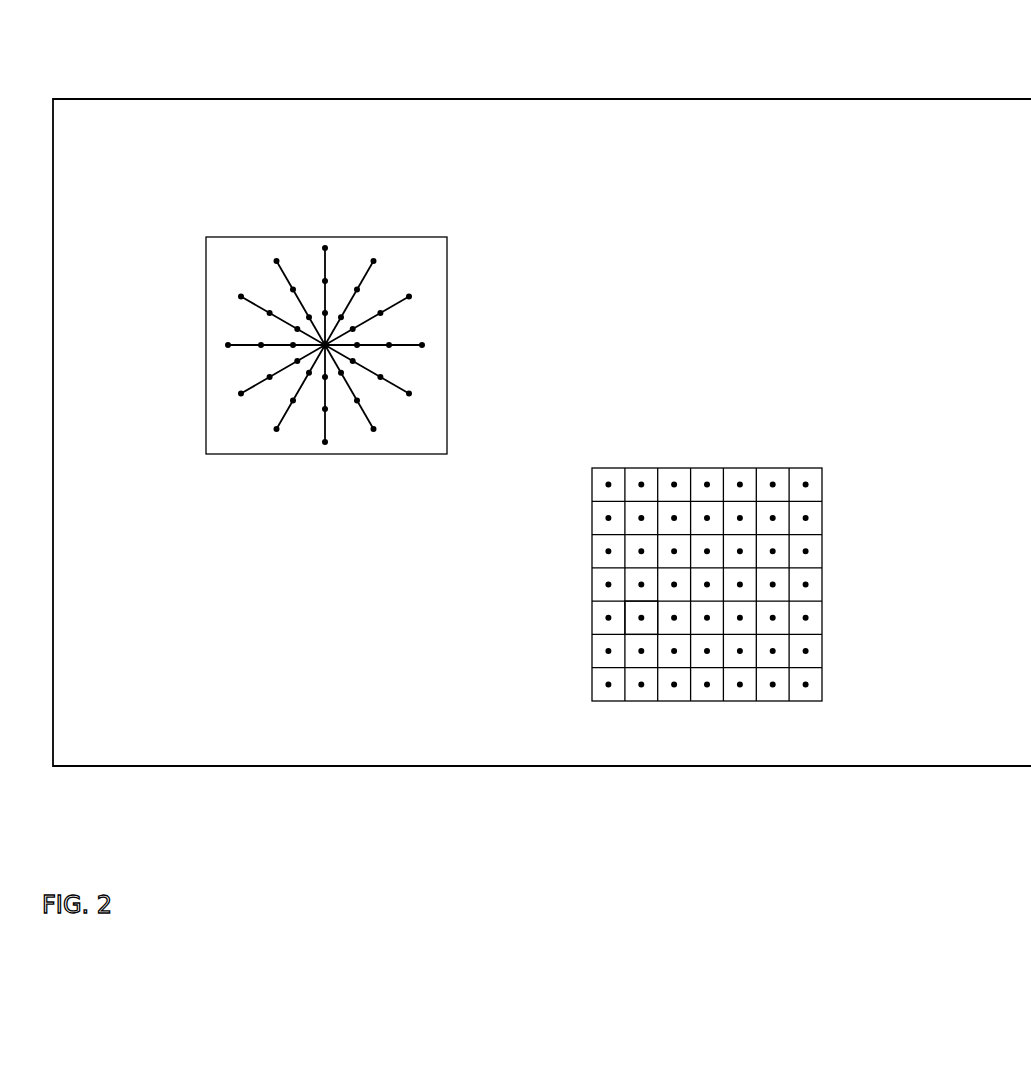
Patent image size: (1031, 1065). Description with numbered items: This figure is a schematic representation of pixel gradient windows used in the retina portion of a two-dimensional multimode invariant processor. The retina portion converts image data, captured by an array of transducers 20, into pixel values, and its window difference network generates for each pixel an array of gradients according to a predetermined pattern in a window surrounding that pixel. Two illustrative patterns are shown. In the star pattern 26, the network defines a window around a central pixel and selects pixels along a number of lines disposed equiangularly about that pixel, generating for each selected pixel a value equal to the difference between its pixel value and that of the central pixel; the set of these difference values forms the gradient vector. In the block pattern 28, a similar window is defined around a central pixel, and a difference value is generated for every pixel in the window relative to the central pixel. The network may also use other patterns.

The array of transducers 20 is at (815, 99).
The star pattern 26 is at (395, 314).
The block pattern 28 is at (718, 557).